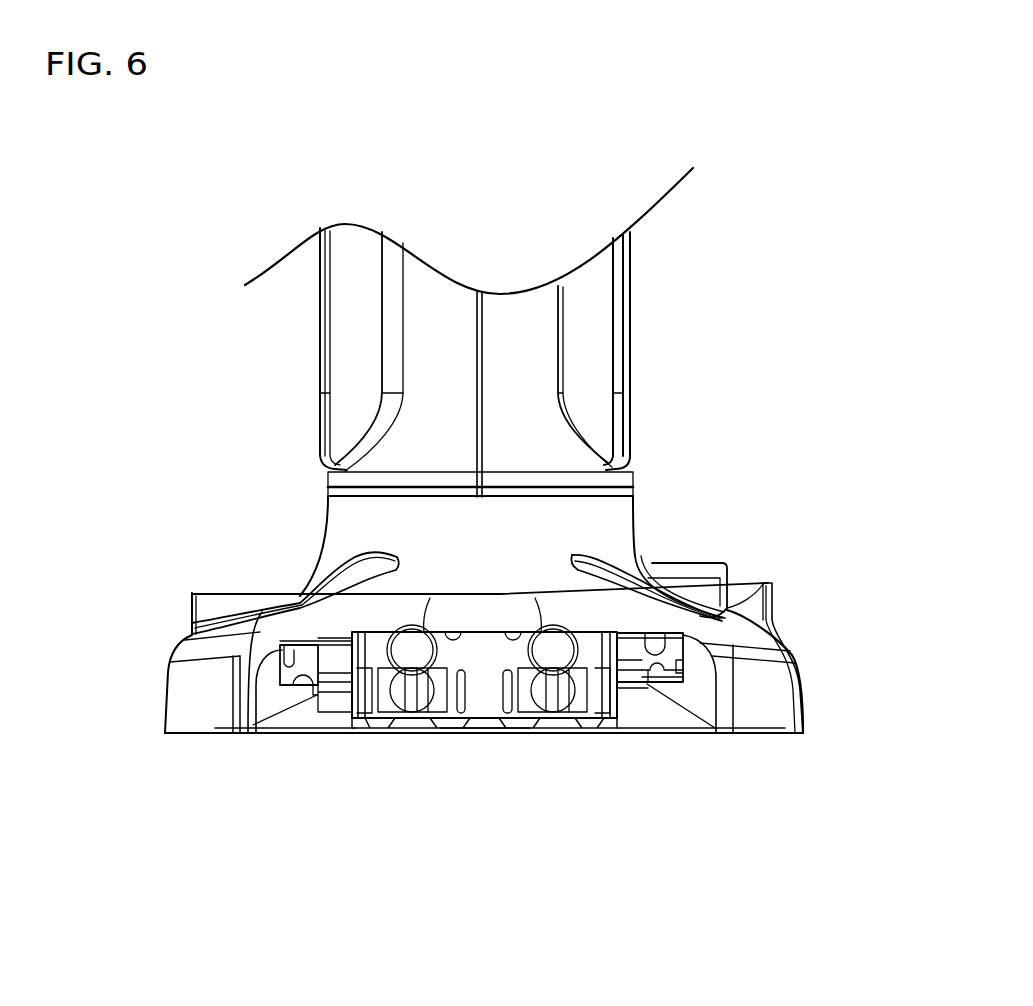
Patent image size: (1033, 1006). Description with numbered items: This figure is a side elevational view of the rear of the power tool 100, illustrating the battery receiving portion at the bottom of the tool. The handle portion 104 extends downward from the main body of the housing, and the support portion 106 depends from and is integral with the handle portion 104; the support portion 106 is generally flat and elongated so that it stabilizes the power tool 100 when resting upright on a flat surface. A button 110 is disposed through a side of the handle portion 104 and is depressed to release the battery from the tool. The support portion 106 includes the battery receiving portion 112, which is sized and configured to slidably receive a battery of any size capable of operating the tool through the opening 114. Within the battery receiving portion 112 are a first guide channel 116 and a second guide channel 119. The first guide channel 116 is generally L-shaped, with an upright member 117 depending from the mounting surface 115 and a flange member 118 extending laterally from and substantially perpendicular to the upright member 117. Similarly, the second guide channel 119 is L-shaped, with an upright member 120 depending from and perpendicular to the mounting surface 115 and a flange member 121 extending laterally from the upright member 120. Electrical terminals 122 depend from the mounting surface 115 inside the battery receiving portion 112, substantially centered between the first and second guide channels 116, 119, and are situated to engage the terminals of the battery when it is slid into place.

The power tool 100 is at (680, 278).
The handle portion 104 is at (630, 332).
The support portion 106 is at (690, 565).
The button 110 is at (769, 585).
The battery receiving portion 112 is at (805, 691).
The opening 114 is at (542, 742).
The mounting surface 115 is at (647, 652).
The first guide channel 116 is at (263, 700).
The upright member 117 is at (286, 650).
The flange member 118 is at (313, 687).
The second guide channel 119 is at (687, 695).
The upright member 120 is at (686, 663).
The flange member 121 is at (655, 670).
The electrical terminals 122 is at (484, 686).